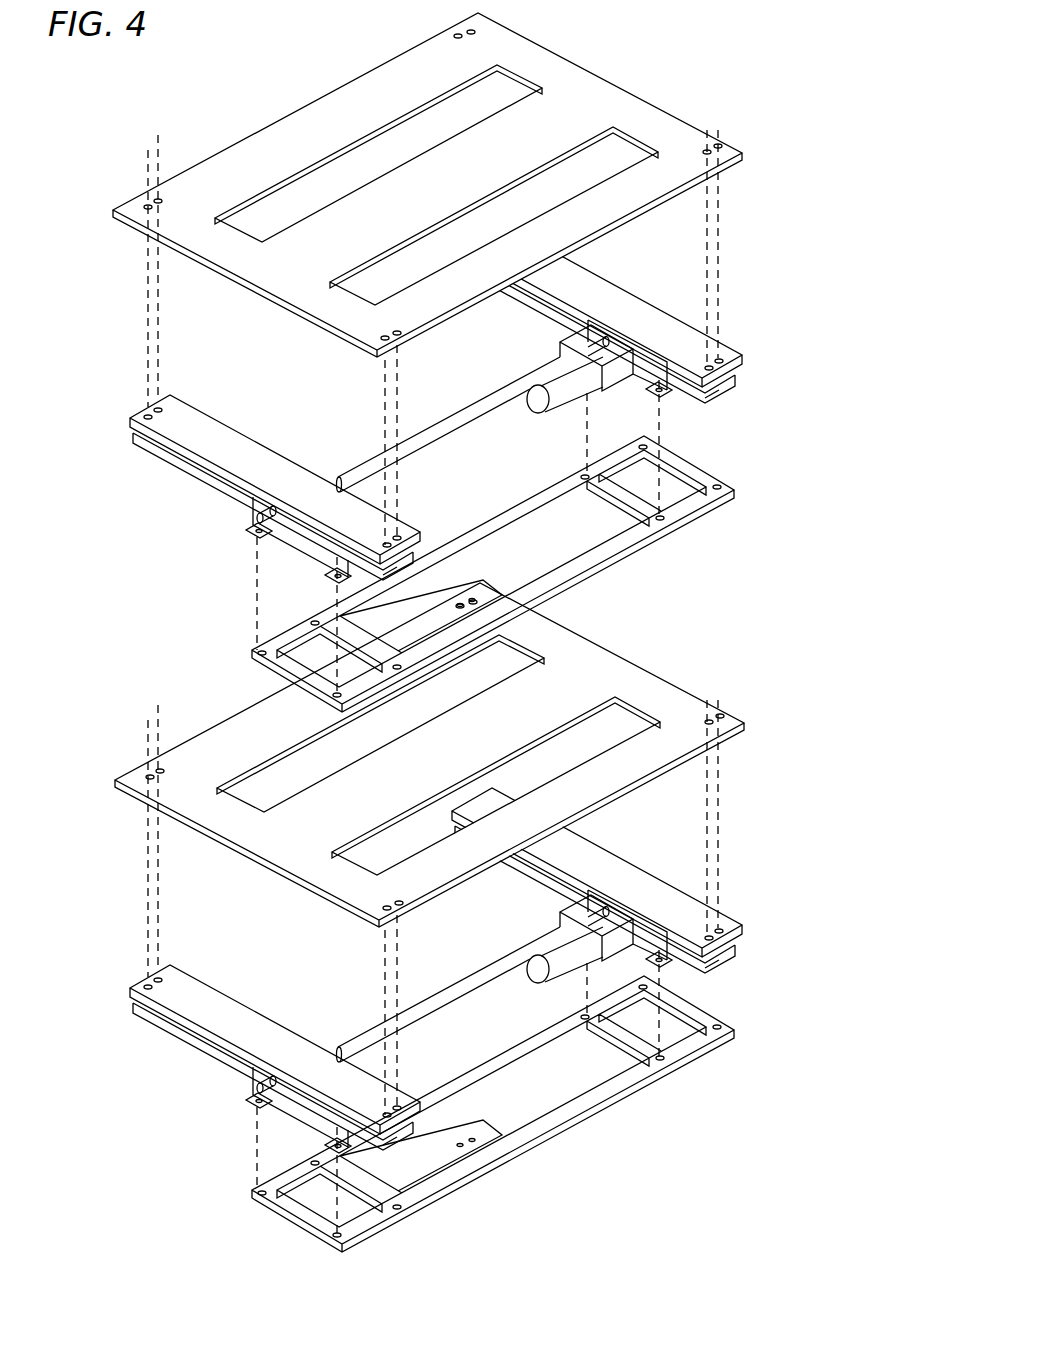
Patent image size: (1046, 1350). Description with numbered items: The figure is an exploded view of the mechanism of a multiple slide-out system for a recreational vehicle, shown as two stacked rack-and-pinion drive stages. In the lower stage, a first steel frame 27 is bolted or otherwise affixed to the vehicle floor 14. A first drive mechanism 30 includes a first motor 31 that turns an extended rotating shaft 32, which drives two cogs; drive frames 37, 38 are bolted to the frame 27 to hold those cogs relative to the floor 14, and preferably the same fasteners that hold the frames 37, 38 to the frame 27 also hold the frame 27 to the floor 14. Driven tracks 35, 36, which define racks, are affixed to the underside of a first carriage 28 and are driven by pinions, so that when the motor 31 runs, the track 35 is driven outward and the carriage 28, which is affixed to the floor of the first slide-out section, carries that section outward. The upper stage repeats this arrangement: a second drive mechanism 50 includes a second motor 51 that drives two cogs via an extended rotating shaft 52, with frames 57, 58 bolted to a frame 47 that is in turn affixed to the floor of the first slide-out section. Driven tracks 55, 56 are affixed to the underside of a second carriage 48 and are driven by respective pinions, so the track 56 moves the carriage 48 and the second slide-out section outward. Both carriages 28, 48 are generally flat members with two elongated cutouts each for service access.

The floor 14 is at (592, 1209).
The first steel frame 27 is at (680, 1055).
The first carriage 28 is at (665, 700).
The first drive mechanism 30 is at (548, 904).
The first motor 31 is at (537, 975).
The extended rotating shaft 32 is at (475, 978).
The driven track 35 is at (627, 850).
The driven track 36 is at (242, 1005).
The drive frame 37 is at (290, 1105).
The drive frame 38 is at (650, 940).
The frame 47 is at (692, 470).
The second carriage 48 is at (615, 100).
The second drive mechanism 50 is at (555, 333).
The second motor 51 is at (535, 405).
The extended rotating shaft 52 is at (505, 392).
The driven track 55 is at (612, 292).
The driven track 56 is at (233, 430).
The frame 57 is at (290, 535).
The frame 58 is at (647, 367).